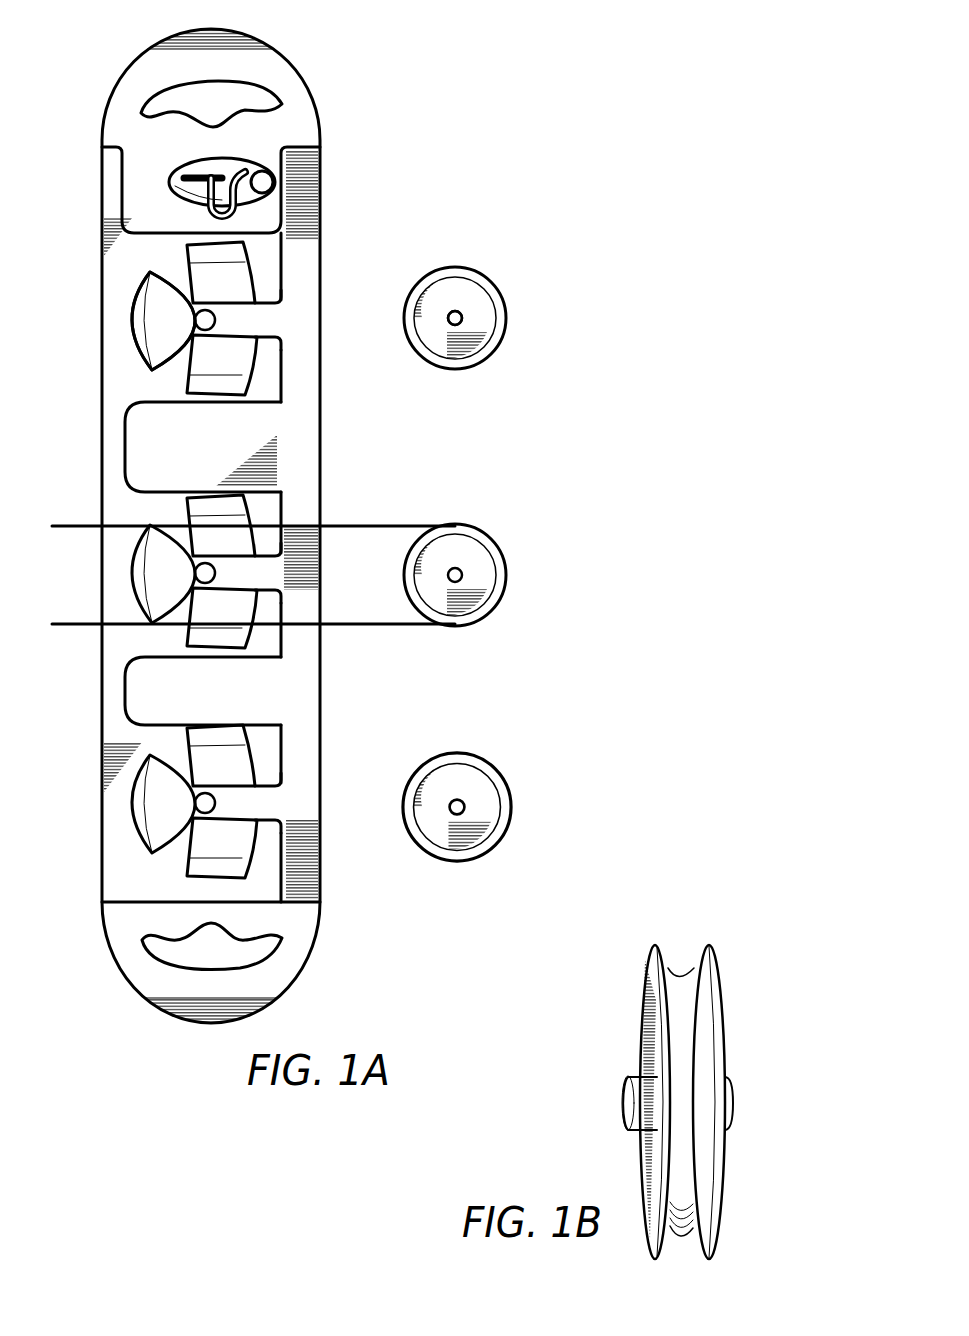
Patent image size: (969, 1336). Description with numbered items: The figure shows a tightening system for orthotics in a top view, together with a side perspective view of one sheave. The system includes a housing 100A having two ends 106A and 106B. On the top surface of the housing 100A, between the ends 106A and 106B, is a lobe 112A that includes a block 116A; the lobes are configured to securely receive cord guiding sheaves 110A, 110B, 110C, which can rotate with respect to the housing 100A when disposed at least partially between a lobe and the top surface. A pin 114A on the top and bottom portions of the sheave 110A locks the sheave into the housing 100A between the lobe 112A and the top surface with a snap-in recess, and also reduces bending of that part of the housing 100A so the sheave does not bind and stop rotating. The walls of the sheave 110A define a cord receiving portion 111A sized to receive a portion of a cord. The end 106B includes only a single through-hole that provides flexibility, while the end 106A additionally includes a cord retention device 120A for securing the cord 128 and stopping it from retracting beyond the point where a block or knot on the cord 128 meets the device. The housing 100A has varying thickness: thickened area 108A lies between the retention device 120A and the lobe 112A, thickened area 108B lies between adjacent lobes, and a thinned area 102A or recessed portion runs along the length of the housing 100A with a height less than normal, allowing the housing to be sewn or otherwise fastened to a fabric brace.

In FIG. 1A, the housing 100A is at (102, 678).
In FIG. 1A, the thinned area 102A is at (307, 882).
In FIG. 1A, the end 106A is at (163, 46).
In FIG. 1A, the end 106B is at (193, 1012).
In FIG. 1A, the thickened area 108A is at (260, 432).
In FIG. 1A, the thickened area 108B is at (263, 685).
In FIG. 1A, the sheave 110A is at (487, 278).
In FIG. 1B, the sheave 110A is at (634, 1009).
In FIG. 1A, the sheave 110B is at (483, 527).
In FIG. 1A, the sheave 110C is at (493, 762).
In FIG. 1B, the cord receiving portion 111A is at (677, 976).
In FIG. 1A, the lobe 112A is at (243, 287).
In FIG. 1A, the pin 114A is at (462, 318).
In FIG. 1B, the pin 114A is at (642, 1130).
In FIG. 1A, the block 116A is at (140, 335).
In FIG. 1A, the cord retention device 120A is at (232, 182).
In FIG. 1A, the cord 128 is at (96, 520).